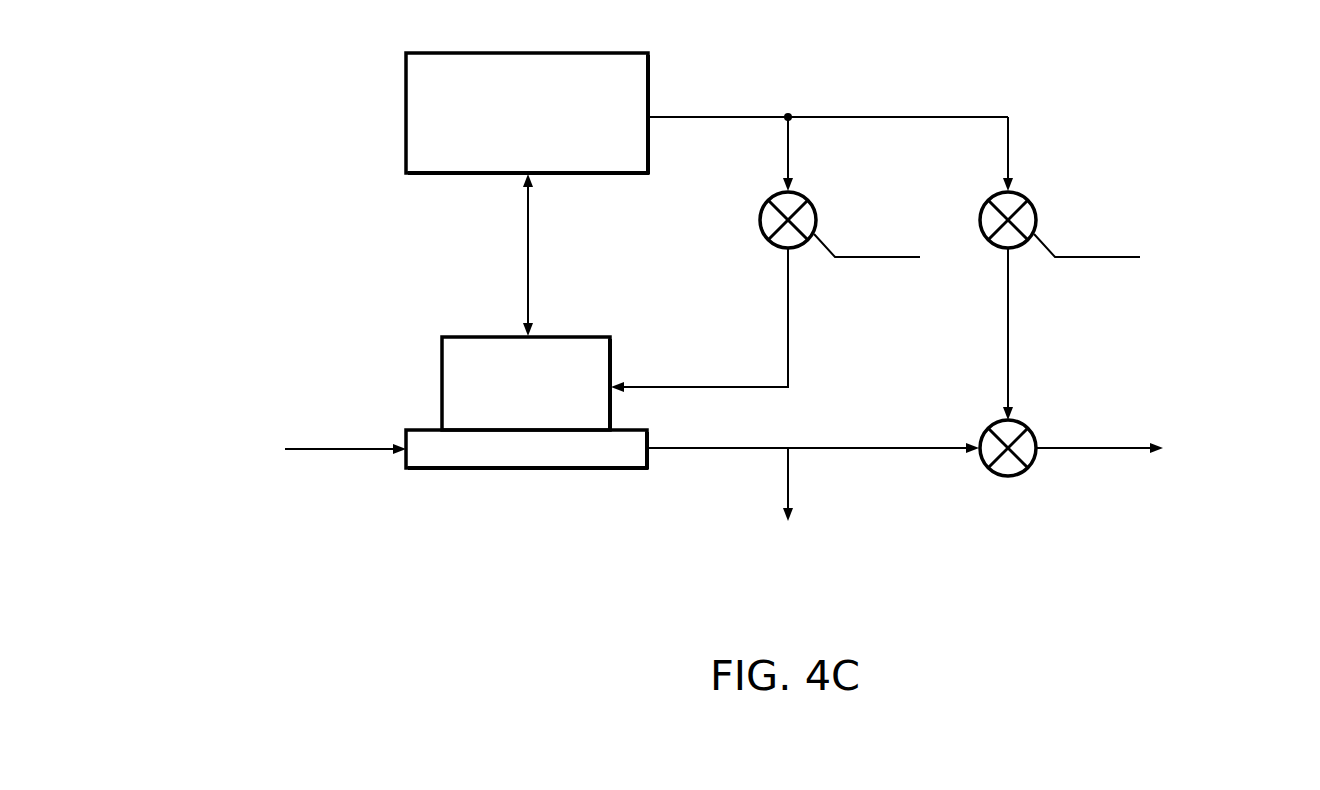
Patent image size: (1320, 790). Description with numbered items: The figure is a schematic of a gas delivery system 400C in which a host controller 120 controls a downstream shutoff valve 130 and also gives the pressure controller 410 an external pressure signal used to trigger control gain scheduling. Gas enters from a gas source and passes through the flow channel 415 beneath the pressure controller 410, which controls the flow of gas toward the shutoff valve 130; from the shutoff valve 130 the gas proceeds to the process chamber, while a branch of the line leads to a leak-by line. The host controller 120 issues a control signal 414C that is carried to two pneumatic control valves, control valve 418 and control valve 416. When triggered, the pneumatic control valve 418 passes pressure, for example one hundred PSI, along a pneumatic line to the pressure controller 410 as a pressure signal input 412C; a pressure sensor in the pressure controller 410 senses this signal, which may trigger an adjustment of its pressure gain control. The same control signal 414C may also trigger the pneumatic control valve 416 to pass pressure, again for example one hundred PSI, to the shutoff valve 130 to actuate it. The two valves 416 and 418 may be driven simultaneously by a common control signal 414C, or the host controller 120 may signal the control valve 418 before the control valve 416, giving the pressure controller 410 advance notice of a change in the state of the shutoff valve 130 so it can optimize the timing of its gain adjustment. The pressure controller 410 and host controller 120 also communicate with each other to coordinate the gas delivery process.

The gas delivery system 400C is at (1172, 88).
The host controller 120 is at (508, 155).
The pressure controller 410 is at (505, 410).
The flow channel 415 is at (515, 453).
The pneumatic control valve 418 is at (797, 193).
The pneumatic control valve 416 is at (1017, 193).
The shutoff valve 130 is at (1022, 426).
The pressure signal input 412C is at (689, 386).
The control signal 414C is at (895, 117).